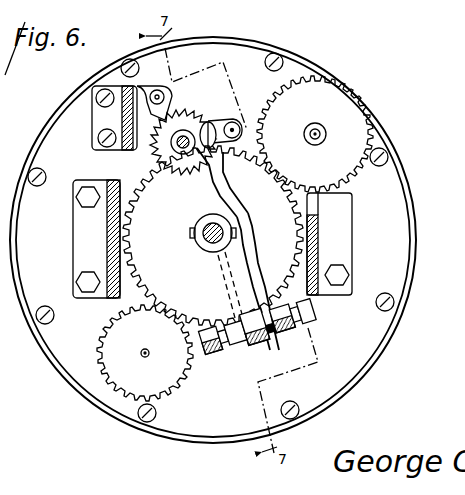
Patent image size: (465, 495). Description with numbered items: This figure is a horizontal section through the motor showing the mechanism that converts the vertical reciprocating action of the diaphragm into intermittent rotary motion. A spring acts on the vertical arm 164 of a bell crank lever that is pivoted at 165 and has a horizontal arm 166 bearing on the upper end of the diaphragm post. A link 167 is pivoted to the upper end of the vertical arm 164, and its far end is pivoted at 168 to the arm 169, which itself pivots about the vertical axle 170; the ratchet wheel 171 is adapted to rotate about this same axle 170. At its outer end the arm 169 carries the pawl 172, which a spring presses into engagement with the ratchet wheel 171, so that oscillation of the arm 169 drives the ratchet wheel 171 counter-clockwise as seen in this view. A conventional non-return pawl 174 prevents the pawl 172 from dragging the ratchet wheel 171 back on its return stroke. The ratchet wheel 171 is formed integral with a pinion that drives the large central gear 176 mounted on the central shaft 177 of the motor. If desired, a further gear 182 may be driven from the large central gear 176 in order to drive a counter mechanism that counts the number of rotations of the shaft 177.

The vertical arm 164 is at (245, 356).
The bell crank lever pivot 165 is at (215, 323).
The horizontal arm 166 is at (226, 274).
The link 167 is at (251, 276).
The link pivot 168 is at (241, 168).
The arm 169 is at (258, 144).
The vertical axle 170 is at (182, 152).
The ratchet wheel 171 is at (152, 150).
The pawl 172 is at (218, 118).
The non-return pawl 174 is at (150, 110).
The gear 176 is at (140, 226).
The central shaft 177 is at (204, 230).
The gear 182 is at (167, 378).